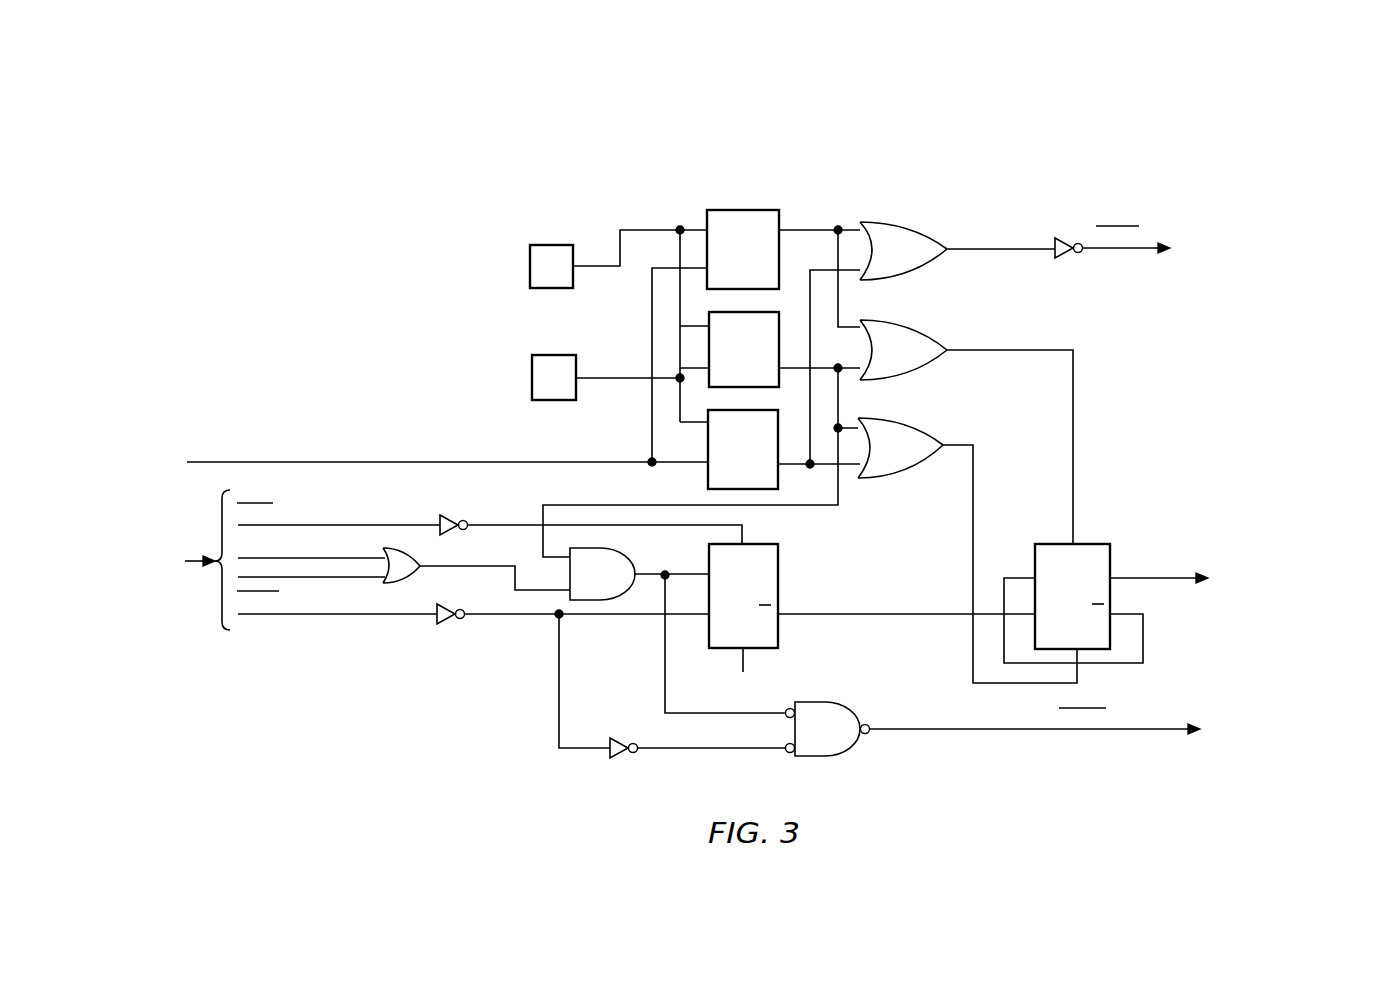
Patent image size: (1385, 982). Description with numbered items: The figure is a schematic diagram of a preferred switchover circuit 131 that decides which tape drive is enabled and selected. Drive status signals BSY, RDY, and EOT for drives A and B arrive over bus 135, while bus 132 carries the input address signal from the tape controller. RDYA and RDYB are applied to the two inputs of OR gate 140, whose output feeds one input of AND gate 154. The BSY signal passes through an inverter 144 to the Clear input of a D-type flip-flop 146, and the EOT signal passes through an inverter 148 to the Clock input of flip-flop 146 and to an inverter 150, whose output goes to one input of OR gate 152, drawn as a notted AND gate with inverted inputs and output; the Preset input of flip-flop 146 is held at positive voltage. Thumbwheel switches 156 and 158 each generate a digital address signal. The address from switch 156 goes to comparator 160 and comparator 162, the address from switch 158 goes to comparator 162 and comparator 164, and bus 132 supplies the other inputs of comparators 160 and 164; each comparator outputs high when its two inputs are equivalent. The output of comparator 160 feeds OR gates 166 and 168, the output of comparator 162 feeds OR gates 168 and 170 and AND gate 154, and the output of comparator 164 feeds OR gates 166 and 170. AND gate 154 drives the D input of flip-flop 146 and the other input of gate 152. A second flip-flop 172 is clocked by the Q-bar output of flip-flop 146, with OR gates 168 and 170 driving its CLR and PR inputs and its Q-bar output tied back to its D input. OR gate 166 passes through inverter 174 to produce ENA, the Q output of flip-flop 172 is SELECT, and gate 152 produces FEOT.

The switchover circuit 131 is at (566, 187).
The bus 132 is at (475, 462).
The bus 135 is at (310, 560).
The OR gate 140 is at (386, 549).
The inverter 144 is at (452, 519).
The flip-flop 146 is at (764, 544).
The inverter 148 is at (446, 624).
The inverter 150 is at (616, 738).
The OR gate 152 is at (830, 702).
The AND gate 154 is at (605, 548).
The thumbwheel switch 156 is at (548, 246).
The thumbwheel switch 158 is at (557, 355).
The comparator 160 is at (735, 210).
The comparator 162 is at (742, 312).
The comparator 164 is at (740, 410).
The OR gate 166 is at (900, 222).
The OR gate 168 is at (920, 322).
The OR gate 170 is at (908, 420).
The second flip-flop 172 is at (1095, 544).
The inverter 174 is at (1063, 238).